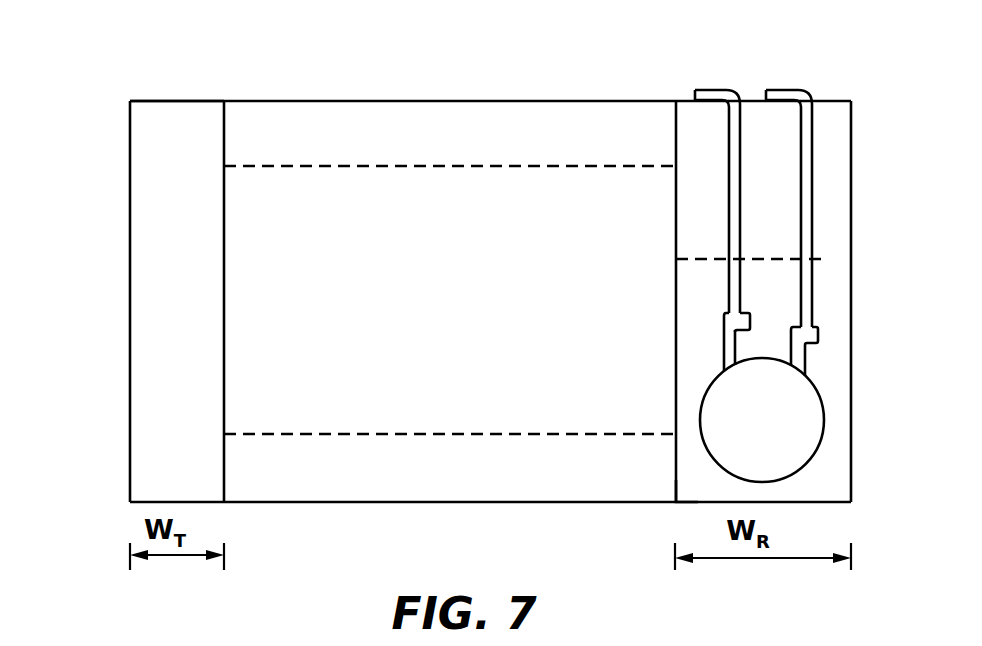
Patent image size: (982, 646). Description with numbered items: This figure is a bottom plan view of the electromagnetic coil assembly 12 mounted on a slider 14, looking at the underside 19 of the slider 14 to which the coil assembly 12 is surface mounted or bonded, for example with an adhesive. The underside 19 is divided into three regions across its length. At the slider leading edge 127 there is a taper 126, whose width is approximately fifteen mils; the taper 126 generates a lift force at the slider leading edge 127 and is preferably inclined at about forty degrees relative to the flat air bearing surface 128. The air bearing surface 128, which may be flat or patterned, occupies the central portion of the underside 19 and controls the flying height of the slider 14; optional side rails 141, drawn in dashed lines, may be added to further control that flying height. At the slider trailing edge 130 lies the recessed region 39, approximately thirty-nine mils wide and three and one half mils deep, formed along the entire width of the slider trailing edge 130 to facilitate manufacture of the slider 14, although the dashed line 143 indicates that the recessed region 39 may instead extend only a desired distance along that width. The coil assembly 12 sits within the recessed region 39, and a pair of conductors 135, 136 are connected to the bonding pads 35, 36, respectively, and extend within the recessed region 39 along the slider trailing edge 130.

The electromagnetic coil assembly 12 is at (745, 425).
The slider 14 is at (412, 298).
The underside 19 is at (383, 96).
The bonding pad 35 is at (732, 322).
The bonding pad 36 is at (814, 335).
The recessed region 39 is at (676, 475).
The taper 126 is at (150, 343).
The slider leading edge 127 is at (161, 96).
The air bearing surface 128 is at (477, 183).
The slider trailing edge 130 is at (834, 93).
The conductor 135 is at (722, 92).
The conductor 136 is at (793, 97).
The side rails 141 is at (552, 120).
The dashed line 143 is at (825, 259).